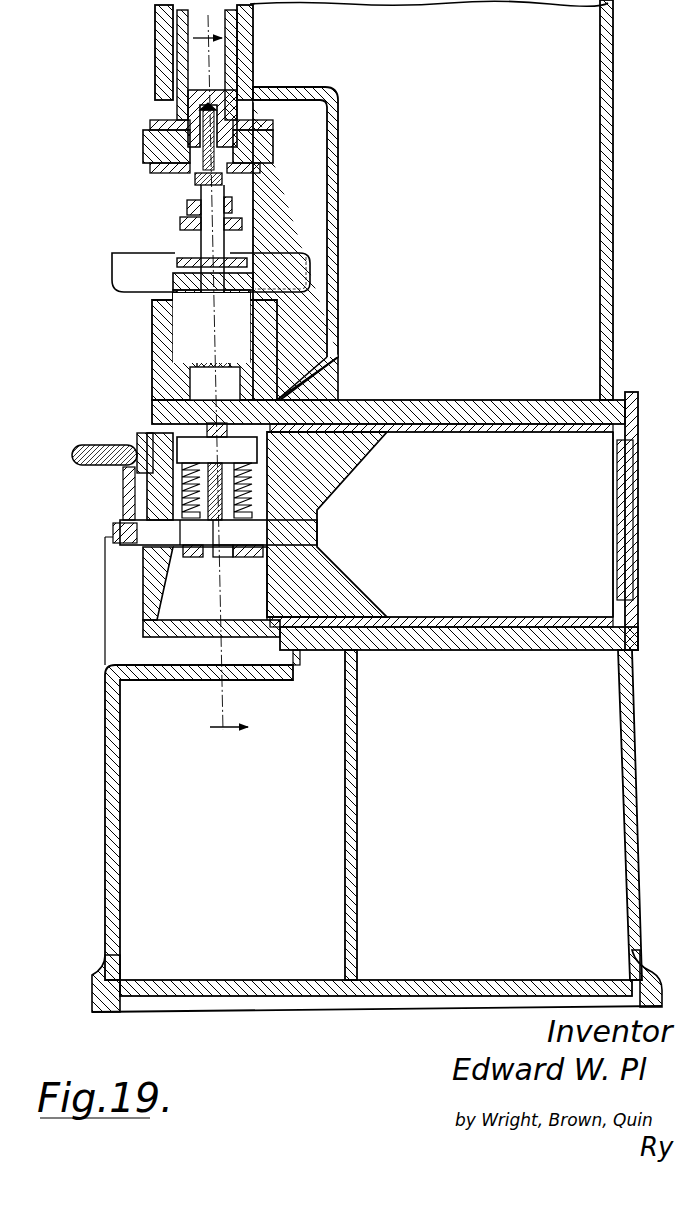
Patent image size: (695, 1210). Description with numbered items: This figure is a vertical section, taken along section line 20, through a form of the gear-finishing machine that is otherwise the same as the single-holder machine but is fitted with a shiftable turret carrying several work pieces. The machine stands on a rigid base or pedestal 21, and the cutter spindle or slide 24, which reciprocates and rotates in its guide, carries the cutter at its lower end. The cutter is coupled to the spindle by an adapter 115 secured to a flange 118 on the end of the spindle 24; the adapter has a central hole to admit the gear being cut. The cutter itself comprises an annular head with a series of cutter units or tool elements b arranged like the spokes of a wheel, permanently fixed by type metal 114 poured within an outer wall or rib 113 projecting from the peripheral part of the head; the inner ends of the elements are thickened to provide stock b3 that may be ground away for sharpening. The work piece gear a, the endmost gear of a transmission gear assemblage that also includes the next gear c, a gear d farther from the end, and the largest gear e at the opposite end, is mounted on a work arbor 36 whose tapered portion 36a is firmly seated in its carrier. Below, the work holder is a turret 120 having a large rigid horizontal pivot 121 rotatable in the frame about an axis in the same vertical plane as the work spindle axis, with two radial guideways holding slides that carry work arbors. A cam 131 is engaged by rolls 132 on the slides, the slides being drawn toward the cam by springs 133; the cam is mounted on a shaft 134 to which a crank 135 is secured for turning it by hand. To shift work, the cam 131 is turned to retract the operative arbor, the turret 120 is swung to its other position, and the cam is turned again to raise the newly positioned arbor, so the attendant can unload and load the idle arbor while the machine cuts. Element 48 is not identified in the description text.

The section line 20 is at (220, 385).
The rigid base or pedestal 21 is at (125, 757).
The cutter spindle or slide 24 is at (185, 110).
The work arbor 36 is at (217, 243).
The tapered portion 36a is at (207, 323).
The cup 48 is at (112, 275).
The outer wall or rib 113 is at (155, 170).
The type metal 114 is at (250, 170).
The adapter 115 is at (145, 148).
The flange 118 is at (160, 125).
The turret 120 is at (165, 375).
The horizontal pivot 121 is at (467, 430).
The cam 131 is at (223, 558).
The rolls 132 is at (217, 471).
The springs 133 is at (182, 488).
The shaft 134 is at (205, 547).
The crank 135 is at (85, 448).
The work piece gear a is at (187, 208).
The cutter units or tool elements b is at (236, 180).
The protruding stock b3 is at (197, 180).
The next gear c is at (181, 224).
The gear d is at (243, 224).
The largest gear e is at (177, 263).